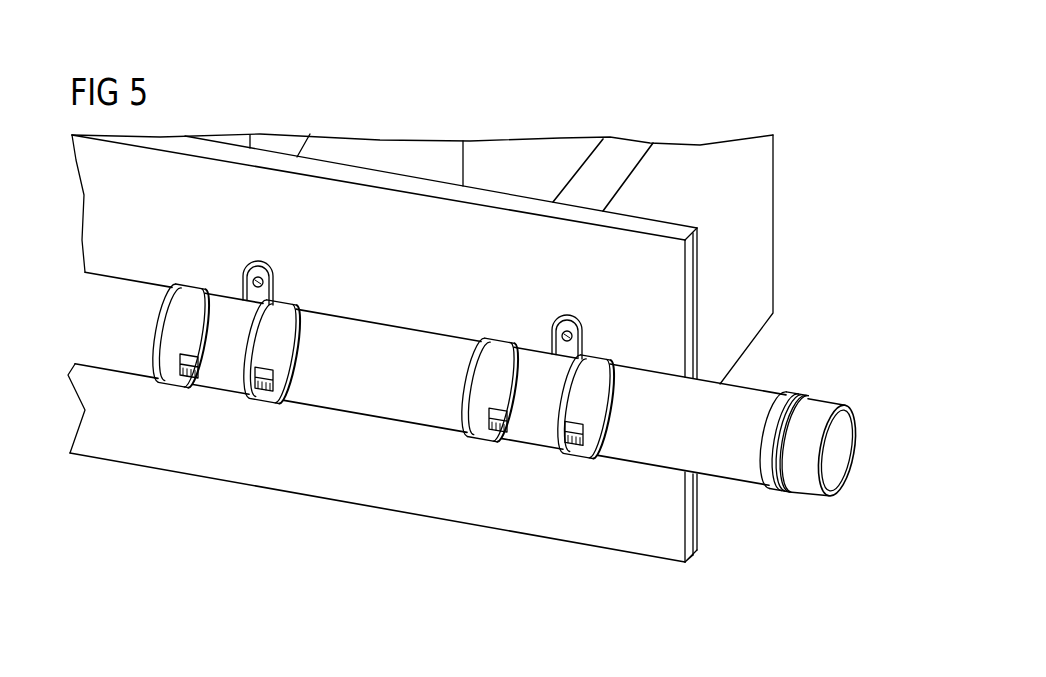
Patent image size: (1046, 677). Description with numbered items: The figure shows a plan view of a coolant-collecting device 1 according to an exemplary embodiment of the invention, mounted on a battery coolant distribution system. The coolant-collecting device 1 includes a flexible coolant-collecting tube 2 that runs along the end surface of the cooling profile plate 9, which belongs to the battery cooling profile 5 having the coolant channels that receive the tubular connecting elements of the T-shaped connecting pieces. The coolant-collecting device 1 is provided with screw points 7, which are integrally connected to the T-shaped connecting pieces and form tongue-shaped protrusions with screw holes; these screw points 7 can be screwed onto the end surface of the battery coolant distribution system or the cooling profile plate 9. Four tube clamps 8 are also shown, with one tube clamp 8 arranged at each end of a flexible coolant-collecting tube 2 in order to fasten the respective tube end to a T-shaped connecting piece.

The coolant-collecting device 1 is at (806, 357).
The flexible coolant-collecting tube 2 is at (380, 337).
The battery cooling profile 5 is at (612, 170).
The screw points 7 is at (240, 277).
The tube clamps 8 is at (193, 383).
The cooling profile plate 9 is at (302, 472).